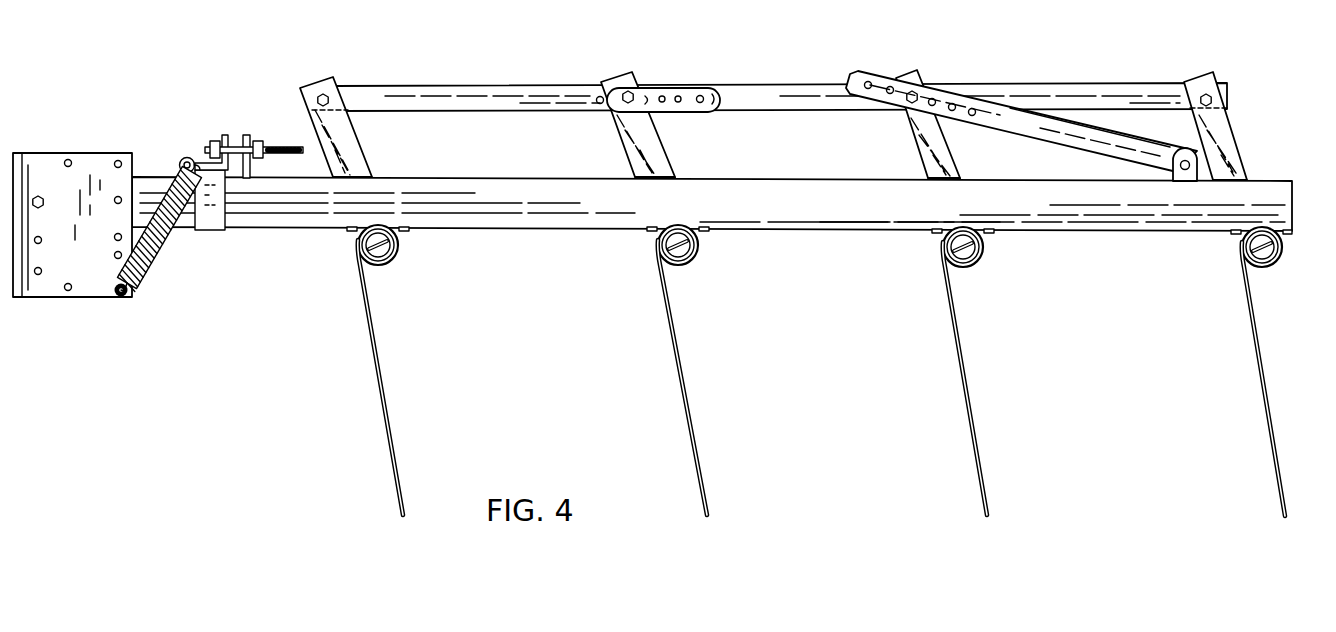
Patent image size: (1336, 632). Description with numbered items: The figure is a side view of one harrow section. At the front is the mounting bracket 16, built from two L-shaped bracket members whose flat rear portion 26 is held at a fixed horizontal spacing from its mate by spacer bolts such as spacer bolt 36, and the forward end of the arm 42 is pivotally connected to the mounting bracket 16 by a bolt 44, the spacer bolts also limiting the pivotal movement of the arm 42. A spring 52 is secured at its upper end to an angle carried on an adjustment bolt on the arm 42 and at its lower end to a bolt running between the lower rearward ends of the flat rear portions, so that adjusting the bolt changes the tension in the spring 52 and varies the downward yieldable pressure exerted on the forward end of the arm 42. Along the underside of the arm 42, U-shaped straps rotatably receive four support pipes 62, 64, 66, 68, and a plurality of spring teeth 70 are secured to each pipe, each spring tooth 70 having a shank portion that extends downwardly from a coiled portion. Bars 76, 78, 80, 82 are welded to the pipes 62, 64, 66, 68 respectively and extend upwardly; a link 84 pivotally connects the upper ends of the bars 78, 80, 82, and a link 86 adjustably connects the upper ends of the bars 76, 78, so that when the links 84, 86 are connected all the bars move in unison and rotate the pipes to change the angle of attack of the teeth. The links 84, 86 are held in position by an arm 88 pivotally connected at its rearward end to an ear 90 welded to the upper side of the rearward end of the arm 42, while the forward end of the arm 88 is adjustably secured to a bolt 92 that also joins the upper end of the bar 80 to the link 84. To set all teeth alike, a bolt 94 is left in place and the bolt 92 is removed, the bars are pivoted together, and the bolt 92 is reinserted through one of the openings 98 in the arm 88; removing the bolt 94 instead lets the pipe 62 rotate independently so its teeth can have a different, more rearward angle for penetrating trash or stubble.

The mounting bracket 16 is at (66, 112).
The flat rear portion 26 is at (76, 277).
The spacer bolt 36 is at (70, 160).
The bolt 44 is at (38, 196).
The spring 52 is at (165, 242).
The arm 42 is at (600, 193).
The support pipe 62 is at (397, 257).
The support pipe 64 is at (693, 260).
The support pipe 66 is at (977, 260).
The support pipe 68 is at (1277, 263).
The spring tooth 70 is at (392, 367).
The bar 76 is at (352, 143).
The bar 78 is at (640, 152).
The bar 80 is at (918, 147).
The bar 82 is at (1230, 145).
The link 84 is at (1065, 88).
The link 86 is at (480, 97).
The arm 88 is at (1060, 138).
The ear 90 is at (1188, 182).
The bolt 92 is at (903, 80).
The bolt 94 is at (637, 93).
The opening 98 is at (975, 108).